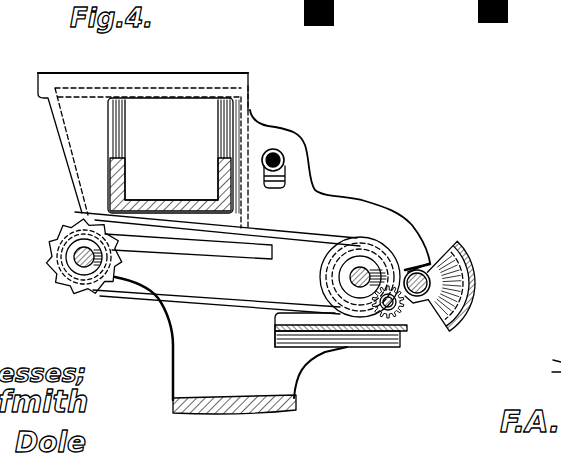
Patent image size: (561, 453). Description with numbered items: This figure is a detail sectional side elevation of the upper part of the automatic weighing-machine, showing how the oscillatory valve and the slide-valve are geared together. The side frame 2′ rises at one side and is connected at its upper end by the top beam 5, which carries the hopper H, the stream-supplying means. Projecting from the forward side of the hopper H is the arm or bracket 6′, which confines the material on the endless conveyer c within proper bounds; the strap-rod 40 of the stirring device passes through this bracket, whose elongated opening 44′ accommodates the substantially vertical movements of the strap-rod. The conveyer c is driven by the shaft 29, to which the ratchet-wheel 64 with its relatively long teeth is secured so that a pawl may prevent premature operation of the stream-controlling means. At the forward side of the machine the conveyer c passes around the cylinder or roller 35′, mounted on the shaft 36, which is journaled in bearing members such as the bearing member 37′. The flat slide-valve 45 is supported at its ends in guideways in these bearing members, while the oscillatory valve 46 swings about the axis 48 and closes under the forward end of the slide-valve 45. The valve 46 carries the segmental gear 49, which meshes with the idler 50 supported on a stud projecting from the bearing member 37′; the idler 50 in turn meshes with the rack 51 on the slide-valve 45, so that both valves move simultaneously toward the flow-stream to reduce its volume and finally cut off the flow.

The hopper H is at (143, 150).
The top beam 5 is at (110, 178).
The strap-rod 40 is at (281, 153).
The elongated opening 44′ is at (284, 183).
The arm or bracket 6′ is at (366, 209).
The endless conveyer c is at (287, 228).
The cylinder or roller 35′ is at (345, 247).
The shaft 36 is at (352, 273).
The axis 48 is at (407, 270).
The rack 51 is at (332, 312).
The reciprocatory valve or slide-valve 45 is at (337, 332).
The bearing member 37′ is at (367, 347).
The idler 50 is at (400, 317).
The segmental gear 49 is at (413, 303).
The oscillatory valve 46 is at (455, 300).
The driven member or shaft 29 is at (72, 256).
The ratchet-wheel 64 is at (62, 276).
The side frame 2′ is at (177, 368).